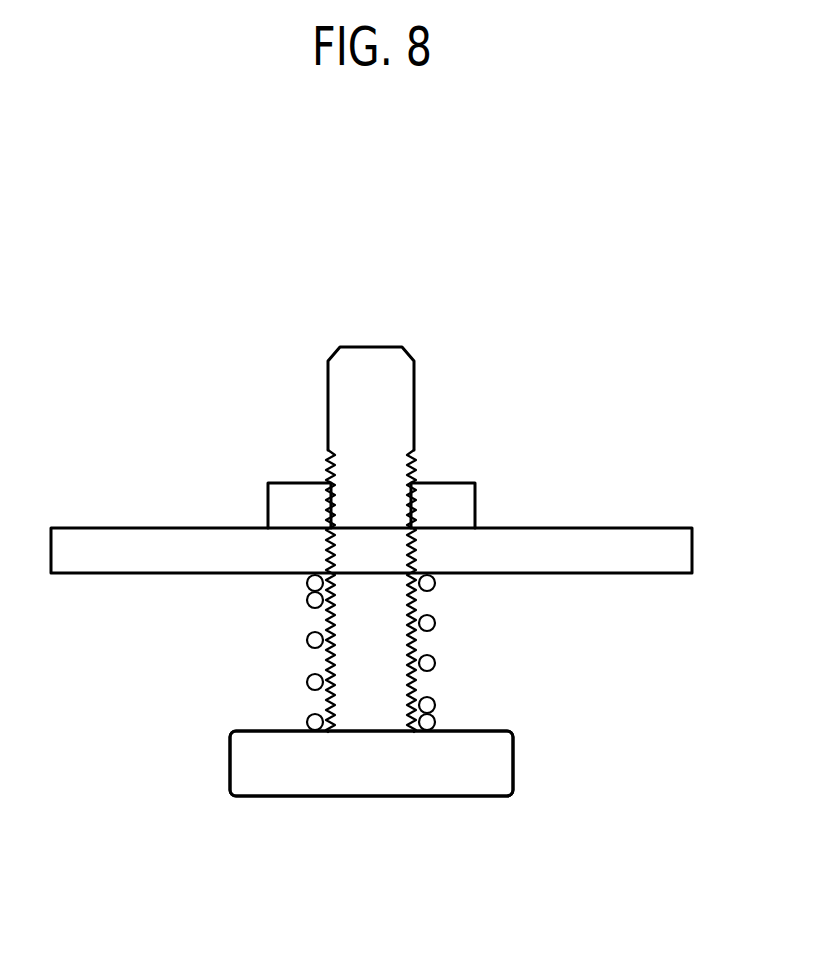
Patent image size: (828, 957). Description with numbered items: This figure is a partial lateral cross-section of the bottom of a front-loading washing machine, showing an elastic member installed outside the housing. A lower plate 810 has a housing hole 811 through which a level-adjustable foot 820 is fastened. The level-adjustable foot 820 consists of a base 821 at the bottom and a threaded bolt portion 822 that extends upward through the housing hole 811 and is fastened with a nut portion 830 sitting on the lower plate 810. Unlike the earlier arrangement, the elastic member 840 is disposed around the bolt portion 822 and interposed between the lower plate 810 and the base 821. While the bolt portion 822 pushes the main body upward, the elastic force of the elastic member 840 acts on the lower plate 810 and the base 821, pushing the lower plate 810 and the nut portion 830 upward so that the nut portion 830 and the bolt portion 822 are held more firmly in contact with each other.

The lower plate 810 is at (671, 528).
The housing hole 811 is at (413, 535).
The level-adjustable foot 820 is at (371, 810).
The base 821 is at (257, 792).
The bolt portion 822 is at (372, 703).
The nut portion 830 is at (267, 494).
The elastic member 840 is at (298, 580).